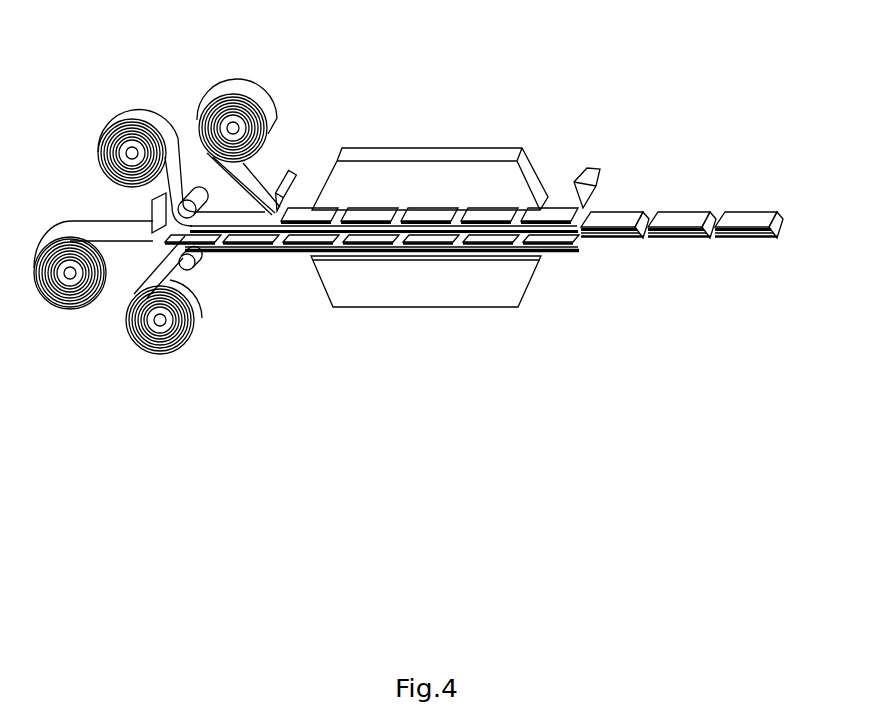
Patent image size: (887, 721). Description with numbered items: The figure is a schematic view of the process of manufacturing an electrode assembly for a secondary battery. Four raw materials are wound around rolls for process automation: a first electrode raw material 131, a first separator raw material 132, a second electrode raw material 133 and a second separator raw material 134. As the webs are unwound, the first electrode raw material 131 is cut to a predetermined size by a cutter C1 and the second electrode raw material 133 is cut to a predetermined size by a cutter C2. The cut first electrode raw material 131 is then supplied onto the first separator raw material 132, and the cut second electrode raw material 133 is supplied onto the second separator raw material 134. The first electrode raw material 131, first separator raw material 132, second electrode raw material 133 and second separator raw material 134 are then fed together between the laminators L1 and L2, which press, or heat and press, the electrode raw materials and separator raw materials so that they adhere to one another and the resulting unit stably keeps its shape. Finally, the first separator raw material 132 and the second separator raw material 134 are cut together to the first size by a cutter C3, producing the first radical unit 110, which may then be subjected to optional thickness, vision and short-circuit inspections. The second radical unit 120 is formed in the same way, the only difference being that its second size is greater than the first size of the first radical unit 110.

The first electrode raw material 131 is at (240, 80).
The first separator raw material 132 is at (138, 110).
The second electrode raw material 133 is at (68, 227).
The second separator raw material 134 is at (202, 305).
The cutter C1 is at (297, 172).
The cutter C2 is at (152, 217).
The cutter C3 is at (585, 168).
The laminator L1 is at (428, 155).
The laminator L2 is at (420, 297).
The first radical unit 110 is at (692, 261).
The second radical unit 120 is at (743, 240).